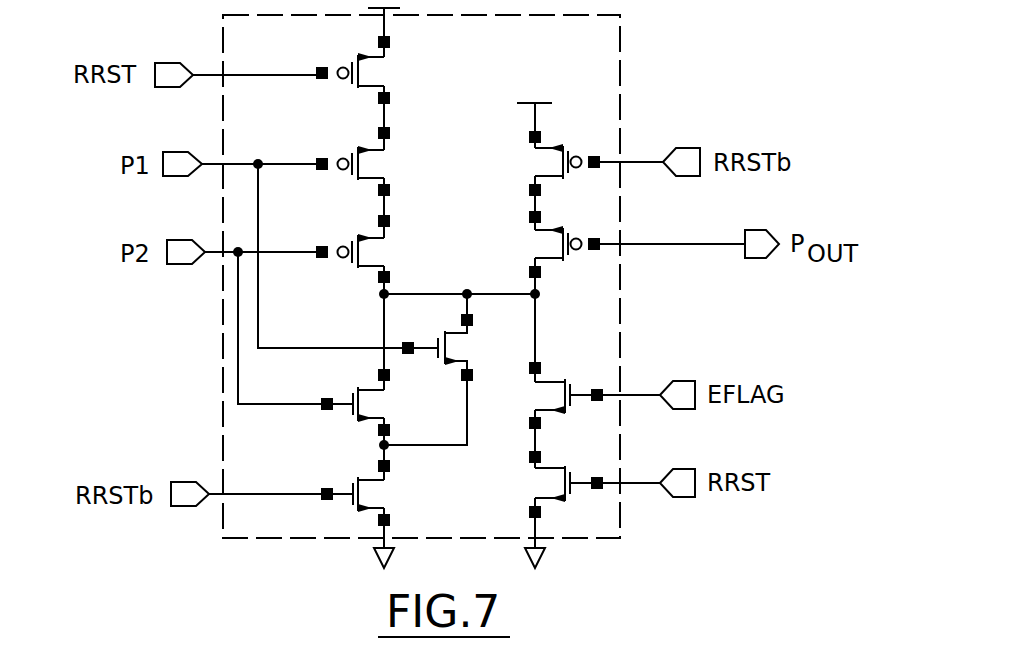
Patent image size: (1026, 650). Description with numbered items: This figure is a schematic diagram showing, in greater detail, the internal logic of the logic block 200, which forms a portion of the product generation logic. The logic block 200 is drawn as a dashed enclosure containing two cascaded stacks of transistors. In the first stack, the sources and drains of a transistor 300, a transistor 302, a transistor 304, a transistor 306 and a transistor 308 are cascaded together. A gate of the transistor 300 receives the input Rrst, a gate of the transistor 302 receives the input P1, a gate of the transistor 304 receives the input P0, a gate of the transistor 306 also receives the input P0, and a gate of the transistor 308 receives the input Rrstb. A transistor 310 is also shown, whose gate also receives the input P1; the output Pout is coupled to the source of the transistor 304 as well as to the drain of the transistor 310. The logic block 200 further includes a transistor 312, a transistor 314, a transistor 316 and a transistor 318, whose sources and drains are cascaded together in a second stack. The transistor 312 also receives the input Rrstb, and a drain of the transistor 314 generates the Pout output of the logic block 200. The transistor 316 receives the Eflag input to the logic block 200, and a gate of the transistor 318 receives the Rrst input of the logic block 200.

The logic block 200 is at (620, 43).
The transistor 300 is at (377, 73).
The transistor 302 is at (377, 164).
The transistor 304 is at (377, 252).
The transistor 306 is at (384, 398).
The transistor 308 is at (383, 492).
The transistor 310 is at (468, 345).
The transistor 312 is at (583, 132).
The transistor 314 is at (570, 229).
The transistor 316 is at (560, 378).
The transistor 318 is at (557, 467).